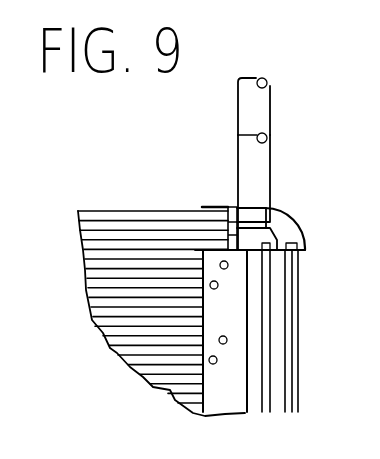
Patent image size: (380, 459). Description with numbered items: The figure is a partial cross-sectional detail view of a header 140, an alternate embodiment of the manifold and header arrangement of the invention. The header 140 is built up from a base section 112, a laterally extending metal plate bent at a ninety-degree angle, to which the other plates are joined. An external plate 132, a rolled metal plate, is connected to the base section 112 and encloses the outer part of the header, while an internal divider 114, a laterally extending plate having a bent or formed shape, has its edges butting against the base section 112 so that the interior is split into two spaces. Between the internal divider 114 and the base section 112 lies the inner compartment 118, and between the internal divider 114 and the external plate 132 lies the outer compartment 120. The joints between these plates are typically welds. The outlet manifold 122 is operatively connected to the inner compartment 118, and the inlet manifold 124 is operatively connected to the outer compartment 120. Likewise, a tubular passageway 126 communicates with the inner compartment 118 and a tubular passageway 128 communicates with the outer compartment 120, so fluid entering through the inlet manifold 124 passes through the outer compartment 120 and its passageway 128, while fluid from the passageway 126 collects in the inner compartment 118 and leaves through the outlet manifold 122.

The base section 112 is at (297, 252).
The internal divider 114 is at (300, 255).
The inner compartment 118 is at (241, 238).
The outer compartment 120 is at (276, 221).
The outlet manifold 122 is at (270, 155).
The inlet manifold 124 is at (270, 113).
The tubular passageway 126 is at (268, 371).
The tubular passageway 128 is at (297, 327).
The external plate 132 is at (300, 240).
The header 140 is at (272, 213).